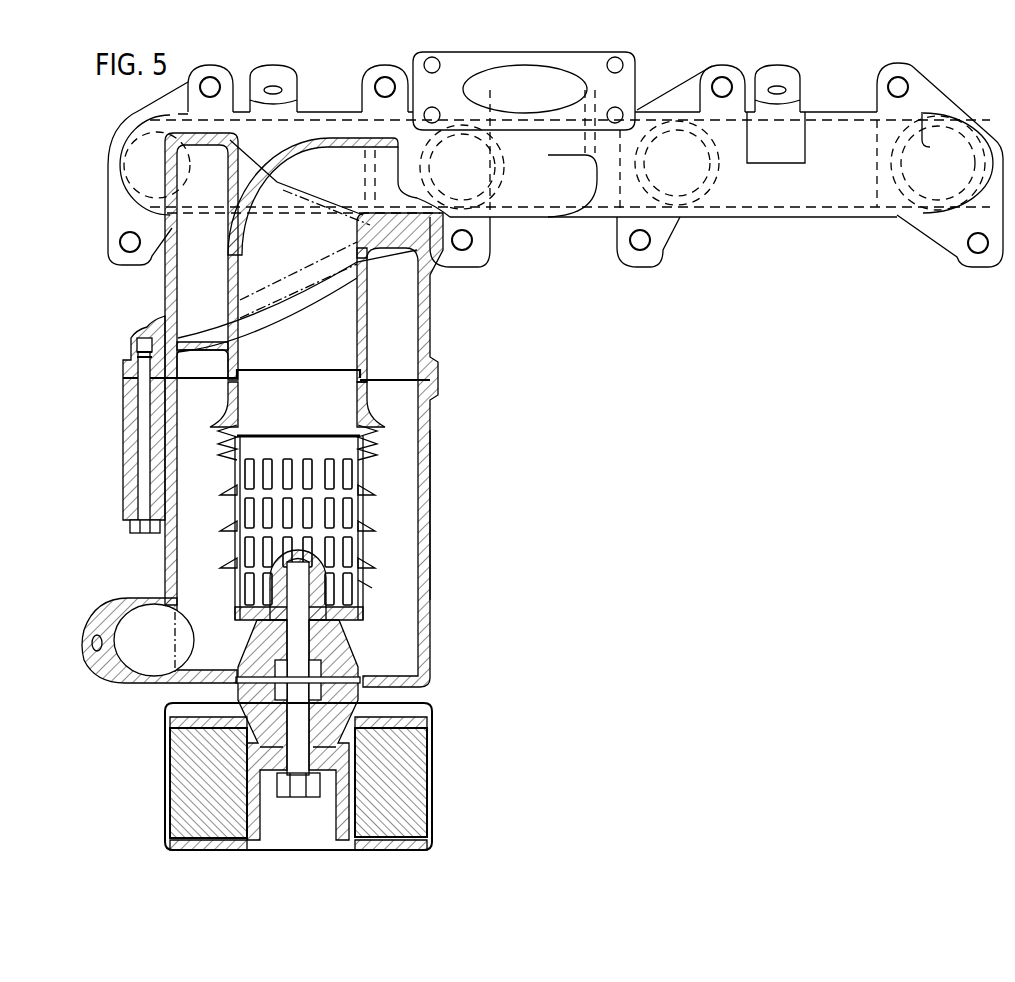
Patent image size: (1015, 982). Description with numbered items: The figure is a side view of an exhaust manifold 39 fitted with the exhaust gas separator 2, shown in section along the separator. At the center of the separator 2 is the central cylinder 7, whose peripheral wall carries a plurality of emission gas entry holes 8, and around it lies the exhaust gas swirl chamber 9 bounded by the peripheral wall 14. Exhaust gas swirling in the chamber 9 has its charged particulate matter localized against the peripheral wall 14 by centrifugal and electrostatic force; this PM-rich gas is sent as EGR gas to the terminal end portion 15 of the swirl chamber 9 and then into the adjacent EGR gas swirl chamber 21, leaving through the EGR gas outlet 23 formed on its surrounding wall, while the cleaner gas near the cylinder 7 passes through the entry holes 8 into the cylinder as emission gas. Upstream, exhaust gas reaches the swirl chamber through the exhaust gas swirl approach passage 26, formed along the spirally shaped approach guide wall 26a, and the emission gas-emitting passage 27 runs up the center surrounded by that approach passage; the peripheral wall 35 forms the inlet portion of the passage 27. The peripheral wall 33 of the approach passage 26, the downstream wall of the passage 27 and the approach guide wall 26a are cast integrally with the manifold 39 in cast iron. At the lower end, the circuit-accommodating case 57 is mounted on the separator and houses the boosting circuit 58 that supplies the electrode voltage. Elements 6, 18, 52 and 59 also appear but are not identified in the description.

The exhaust gas separator 2 is at (442, 466).
The spring member 6 is at (222, 452).
The central cylinder 7 is at (383, 586).
The emission gas entry holes 8 is at (233, 478).
The exhaust gas swirl chamber 9 is at (384, 527).
The peripheral wall 14 is at (430, 572).
The terminal end portion 15 is at (385, 593).
The inner pipe 18 is at (428, 342).
The EGR gas swirl chamber 21 is at (393, 667).
The EGR gas outlet 23 is at (127, 680).
The exhaust gas swirl approach passage 26 is at (197, 307).
The approach guide wall 26a is at (160, 323).
The emission gas-emitting passage 27 is at (267, 263).
The peripheral wall of the exhaust gas swirl approach passage 33 is at (423, 307).
The peripheral wall of the inlet of the emission gas-emitting passage 35 is at (365, 403).
The exhaust manifold 39 is at (805, 193).
The valve stem 52 is at (300, 747).
The circuit-accommodating case 57 is at (432, 745).
The boosting circuit 58 is at (393, 787).
The nut 59 is at (306, 811).